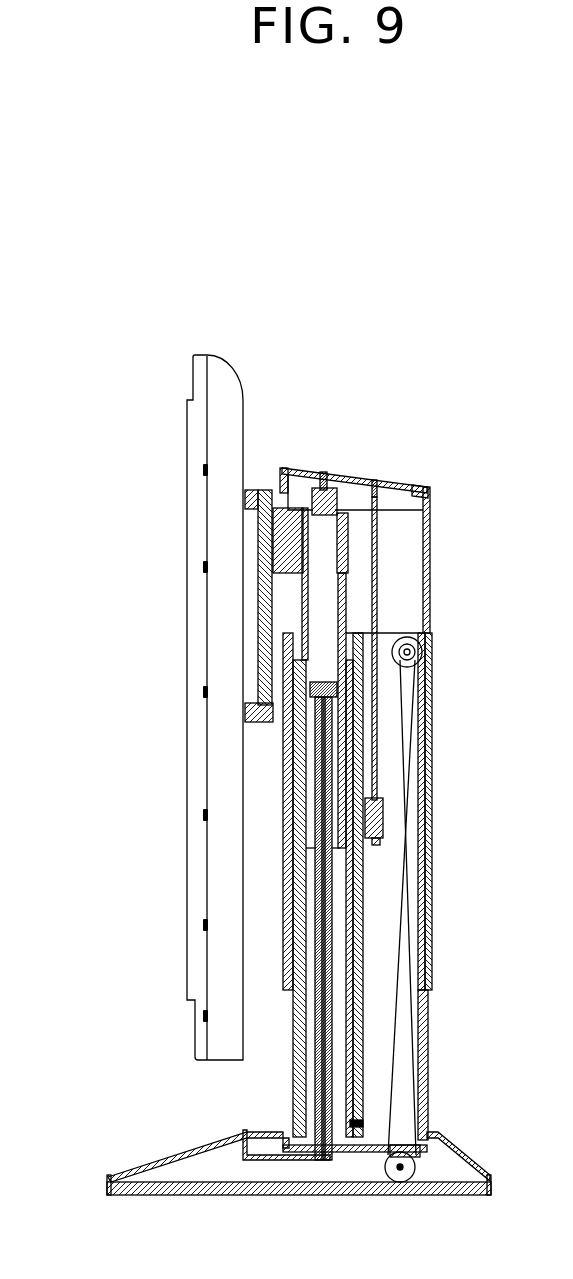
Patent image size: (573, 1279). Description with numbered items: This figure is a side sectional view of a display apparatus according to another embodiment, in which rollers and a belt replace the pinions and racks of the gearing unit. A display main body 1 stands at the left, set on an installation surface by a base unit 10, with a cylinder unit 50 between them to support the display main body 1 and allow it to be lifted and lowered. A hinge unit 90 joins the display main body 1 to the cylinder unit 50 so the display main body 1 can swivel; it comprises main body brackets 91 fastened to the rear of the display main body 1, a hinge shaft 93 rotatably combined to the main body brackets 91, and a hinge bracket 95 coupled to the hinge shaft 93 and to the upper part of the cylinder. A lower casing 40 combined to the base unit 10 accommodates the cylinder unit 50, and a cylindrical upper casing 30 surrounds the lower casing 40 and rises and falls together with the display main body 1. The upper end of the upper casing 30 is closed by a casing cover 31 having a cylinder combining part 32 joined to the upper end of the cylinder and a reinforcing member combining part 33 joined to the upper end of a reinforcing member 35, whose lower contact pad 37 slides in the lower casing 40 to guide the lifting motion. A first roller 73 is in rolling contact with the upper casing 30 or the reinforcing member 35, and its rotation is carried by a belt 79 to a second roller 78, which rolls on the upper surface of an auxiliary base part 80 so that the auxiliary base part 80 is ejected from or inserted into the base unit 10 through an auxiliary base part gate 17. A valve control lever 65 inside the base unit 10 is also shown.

The display main body 1 is at (181, 546).
The base unit 10 is at (276, 1179).
The auxiliary base part gate 17 is at (107, 1183).
The upper casing 30 is at (432, 930).
The casing cover 31 is at (356, 577).
The cylinder combining part 32 is at (358, 478).
The reinforcing member combining part 33 is at (402, 486).
The reinforcing member 35 is at (376, 566).
The contact pad 37 is at (383, 805).
The lower casing 40 is at (428, 1063).
The cylinder unit 50 is at (362, 858).
The valve control lever 65 is at (290, 1160).
The first roller 73 is at (418, 650).
The second roller 78 is at (400, 1183).
The belt 79 is at (410, 1000).
The auxiliary base part 80 is at (168, 1196).
The hinge unit 90 is at (298, 538).
The main body brackets 91 is at (250, 489).
The hinge shaft 93 is at (268, 489).
The hinge bracket 95 is at (332, 455).